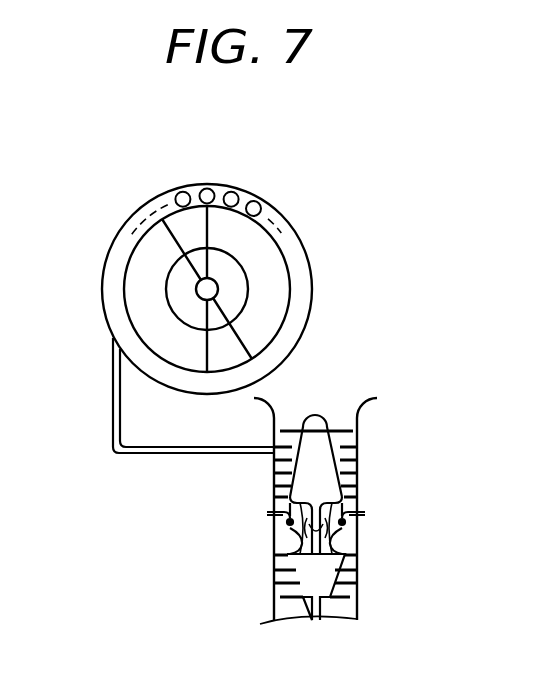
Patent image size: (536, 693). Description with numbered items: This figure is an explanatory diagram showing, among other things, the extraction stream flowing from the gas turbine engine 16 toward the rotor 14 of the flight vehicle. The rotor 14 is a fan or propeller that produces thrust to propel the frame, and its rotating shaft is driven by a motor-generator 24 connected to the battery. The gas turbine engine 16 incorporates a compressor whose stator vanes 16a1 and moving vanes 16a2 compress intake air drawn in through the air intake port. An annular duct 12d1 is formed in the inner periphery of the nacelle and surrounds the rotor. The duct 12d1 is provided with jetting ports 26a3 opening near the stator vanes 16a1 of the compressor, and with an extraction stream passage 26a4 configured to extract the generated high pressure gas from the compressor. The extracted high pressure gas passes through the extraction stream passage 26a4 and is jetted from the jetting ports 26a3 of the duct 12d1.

The annular duct 12d1 is at (123, 228).
The rotor 14 is at (218, 353).
The motor-generator 24 is at (247, 278).
The jetting ports 26a3 is at (229, 191).
The extraction stream passage 26a4 is at (182, 455).
The gas turbine engine 16 is at (273, 567).
The stator vanes 16a1 is at (347, 442).
The moving vanes 16a2 is at (343, 428).